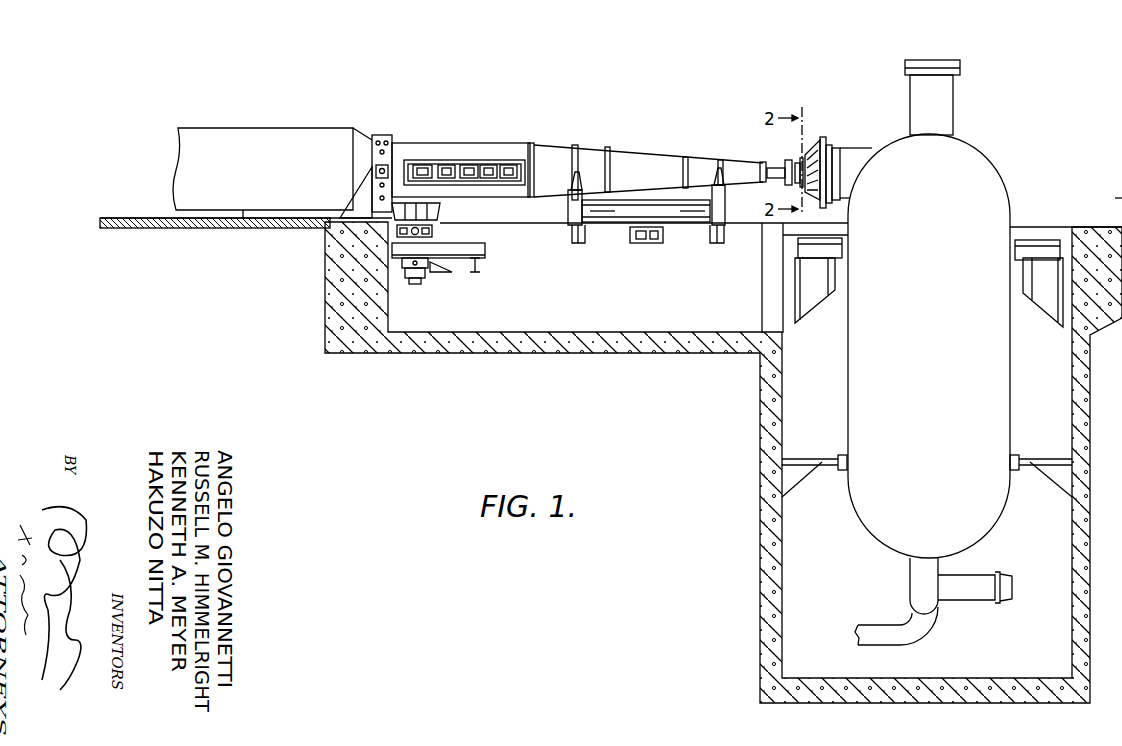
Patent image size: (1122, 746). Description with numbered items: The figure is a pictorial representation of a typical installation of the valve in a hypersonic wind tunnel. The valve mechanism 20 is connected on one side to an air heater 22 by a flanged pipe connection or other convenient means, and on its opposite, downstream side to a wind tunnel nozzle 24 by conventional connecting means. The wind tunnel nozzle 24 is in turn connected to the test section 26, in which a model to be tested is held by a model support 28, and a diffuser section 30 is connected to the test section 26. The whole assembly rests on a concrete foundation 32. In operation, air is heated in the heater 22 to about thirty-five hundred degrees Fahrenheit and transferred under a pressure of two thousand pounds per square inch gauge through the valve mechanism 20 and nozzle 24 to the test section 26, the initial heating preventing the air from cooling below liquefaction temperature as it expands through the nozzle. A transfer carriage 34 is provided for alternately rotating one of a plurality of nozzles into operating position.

The valve mechanism 20 is at (833, 143).
The air heater 22 is at (980, 152).
The wind tunnel nozzle 24 is at (638, 160).
The test section 26 is at (454, 157).
The model support 28 is at (460, 258).
The diffuser section 30 is at (233, 146).
The concrete foundation 32 is at (593, 353).
The transfer carriage 34 is at (656, 232).